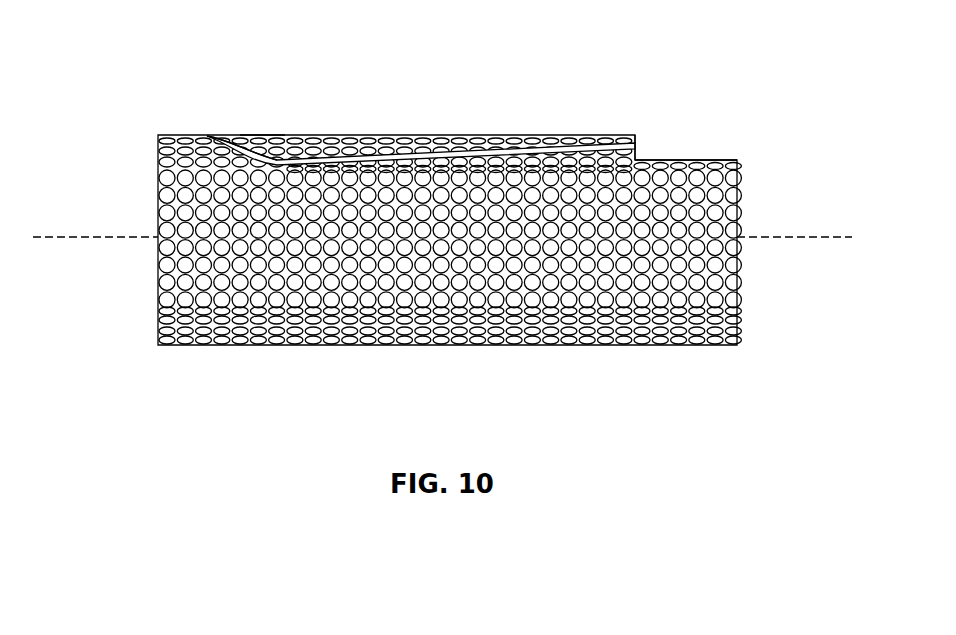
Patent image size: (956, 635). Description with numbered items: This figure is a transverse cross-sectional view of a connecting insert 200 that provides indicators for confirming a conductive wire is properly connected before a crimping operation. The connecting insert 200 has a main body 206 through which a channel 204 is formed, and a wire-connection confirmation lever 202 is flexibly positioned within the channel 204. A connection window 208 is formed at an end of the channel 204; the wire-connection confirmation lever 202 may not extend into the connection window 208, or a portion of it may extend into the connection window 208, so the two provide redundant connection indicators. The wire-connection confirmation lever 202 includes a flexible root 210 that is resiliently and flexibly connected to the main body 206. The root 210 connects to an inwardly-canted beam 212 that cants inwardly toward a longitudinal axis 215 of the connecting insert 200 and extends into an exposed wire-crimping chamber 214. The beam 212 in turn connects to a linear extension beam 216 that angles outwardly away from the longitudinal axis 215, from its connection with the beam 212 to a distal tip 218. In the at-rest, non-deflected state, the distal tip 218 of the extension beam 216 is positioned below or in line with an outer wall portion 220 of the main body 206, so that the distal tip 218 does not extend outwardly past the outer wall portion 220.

The connecting insert 200 is at (147, 59).
The wire-connection confirmation lever 202 is at (450, 137).
The channel 204 is at (311, 137).
The main body 206 is at (740, 326).
The connection window 208 is at (684, 160).
The flexible root 210 is at (243, 137).
The inwardly-canted beam 212 is at (258, 137).
The exposed wire-crimping chamber 214 is at (222, 238).
The longitudinal axis 215 is at (830, 236).
The linear extension beam 216 is at (500, 137).
The distal tip 218 is at (635, 158).
The outer wall portion 220 is at (395, 137).